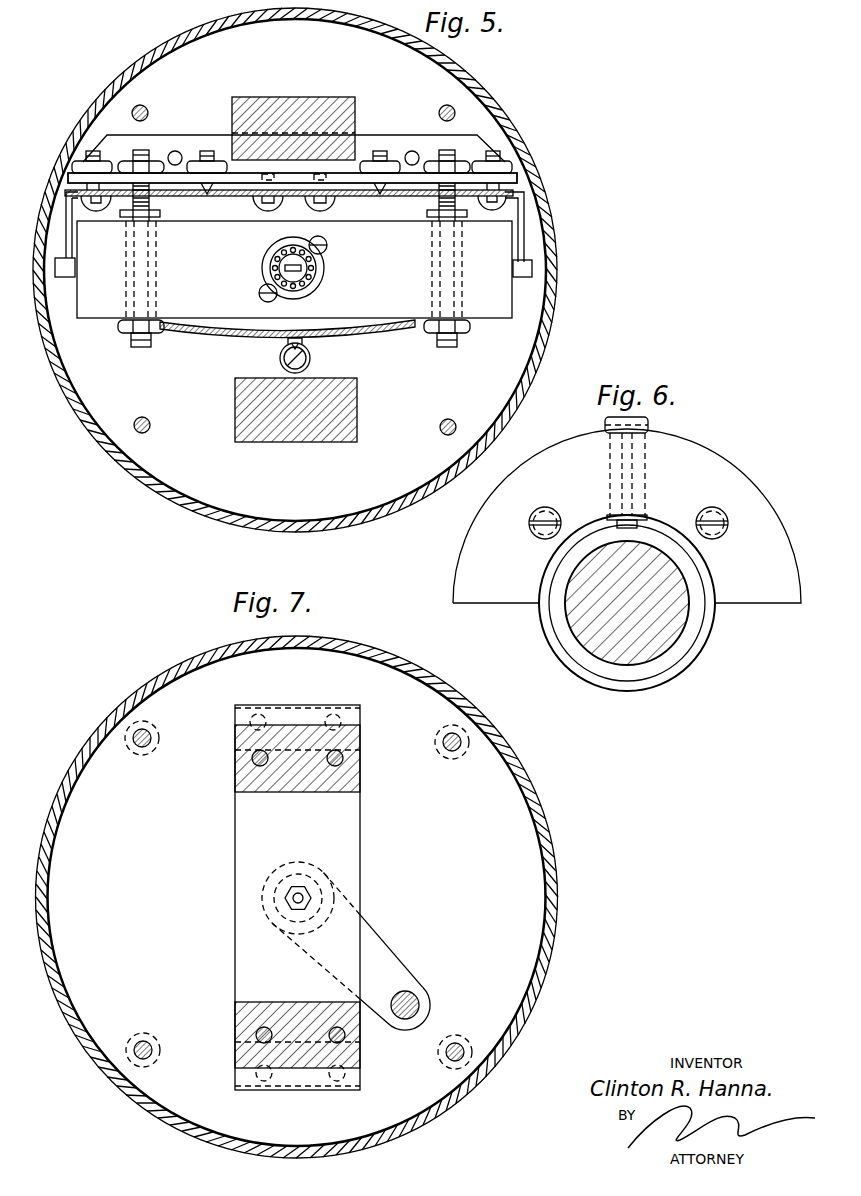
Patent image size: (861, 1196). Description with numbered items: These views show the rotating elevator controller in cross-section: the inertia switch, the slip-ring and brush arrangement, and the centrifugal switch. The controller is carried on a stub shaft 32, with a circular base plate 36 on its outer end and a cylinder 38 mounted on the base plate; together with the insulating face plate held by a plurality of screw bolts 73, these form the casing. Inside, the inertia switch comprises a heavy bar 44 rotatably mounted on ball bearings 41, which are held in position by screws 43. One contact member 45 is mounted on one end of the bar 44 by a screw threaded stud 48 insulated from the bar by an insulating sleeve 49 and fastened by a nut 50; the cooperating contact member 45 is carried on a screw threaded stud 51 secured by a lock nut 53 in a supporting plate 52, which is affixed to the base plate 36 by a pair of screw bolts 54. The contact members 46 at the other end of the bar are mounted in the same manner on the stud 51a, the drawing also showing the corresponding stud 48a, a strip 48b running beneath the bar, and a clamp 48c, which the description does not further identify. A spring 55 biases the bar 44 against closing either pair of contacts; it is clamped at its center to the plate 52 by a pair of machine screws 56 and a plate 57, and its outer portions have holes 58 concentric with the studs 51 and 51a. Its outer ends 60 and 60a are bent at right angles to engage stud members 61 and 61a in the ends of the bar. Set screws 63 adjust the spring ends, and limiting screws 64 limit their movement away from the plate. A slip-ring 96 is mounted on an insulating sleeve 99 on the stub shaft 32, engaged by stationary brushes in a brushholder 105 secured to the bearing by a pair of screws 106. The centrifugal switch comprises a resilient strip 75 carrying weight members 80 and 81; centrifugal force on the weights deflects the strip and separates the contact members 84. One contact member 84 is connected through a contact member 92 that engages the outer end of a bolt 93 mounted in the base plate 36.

In FIG. 6, the stub shaft 32 is at (688, 625).
In FIG. 5, the circular base plate 36 is at (183, 490).
In FIG. 5, the cylinder 38 is at (92, 425).
In FIG. 7, the cylinder 38 is at (556, 803).
In FIG. 5, the ball bearings 41 is at (316, 287).
In FIG. 5, the screws 43 is at (328, 247).
In FIG. 5, the heavy bar 44 is at (500, 319).
In FIG. 5, the contact members 45 is at (161, 213).
In FIG. 5, the contact members 46 is at (427, 213).
In FIG. 5, the screw threaded stud 48 is at (138, 346).
In FIG. 5, the nut 48a is at (447, 348).
In FIG. 5, the spring strip 48b is at (372, 331).
In FIG. 5, the clamp ring 48c is at (310, 356).
In FIG. 5, the insulating sleeve 49 is at (118, 322).
In FIG. 5, the nut 50 is at (156, 335).
In FIG. 5, the screw threaded stud 51 is at (144, 150).
In FIG. 5, the screw threaded stud 51a is at (450, 150).
In FIG. 5, the supporting plate 52 is at (112, 135).
In FIG. 5, the lock nut 53 is at (123, 161).
In FIG. 5, the screw bolts 54 is at (178, 151).
In FIG. 5, the spring 55 is at (365, 196).
In FIG. 5, the machine screws 56 is at (258, 206).
In FIG. 5, the plate 57 is at (330, 205).
In FIG. 5, the holes 58 is at (452, 186).
In FIG. 5, the outer end of spring 60 is at (526, 230).
In FIG. 5, the outer end of spring 60a is at (73, 238).
In FIG. 5, the stud member 61 is at (532, 272).
In FIG. 5, the stud member 61a is at (64, 278).
In FIG. 5, the set screws 63 is at (208, 151).
In FIG. 5, the limiting screws 64 is at (86, 158).
In FIG. 5, the screw bolts 73 is at (151, 425).
In FIG. 7, the screw bolts 73 is at (152, 738).
In FIG. 7, the resilient strip 75 is at (240, 845).
In FIG. 5, the weight member 80 is at (300, 443).
In FIG. 7, the weight member 80 is at (358, 1055).
In FIG. 5, the weight member 81 is at (300, 98).
In FIG. 7, the weight member 81 is at (355, 776).
In FIG. 7, the contact members 84 is at (290, 899).
In FIG. 7, the contact member 92 is at (393, 950).
In FIG. 7, the bolt 93 is at (416, 1000).
In FIG. 6, the slip-ring 96 is at (700, 653).
In FIG. 6, the insulating sleeve 99 is at (565, 628).
In FIG. 6, the brushholder 105 is at (700, 452).
In FIG. 6, the screws 106 is at (722, 510).